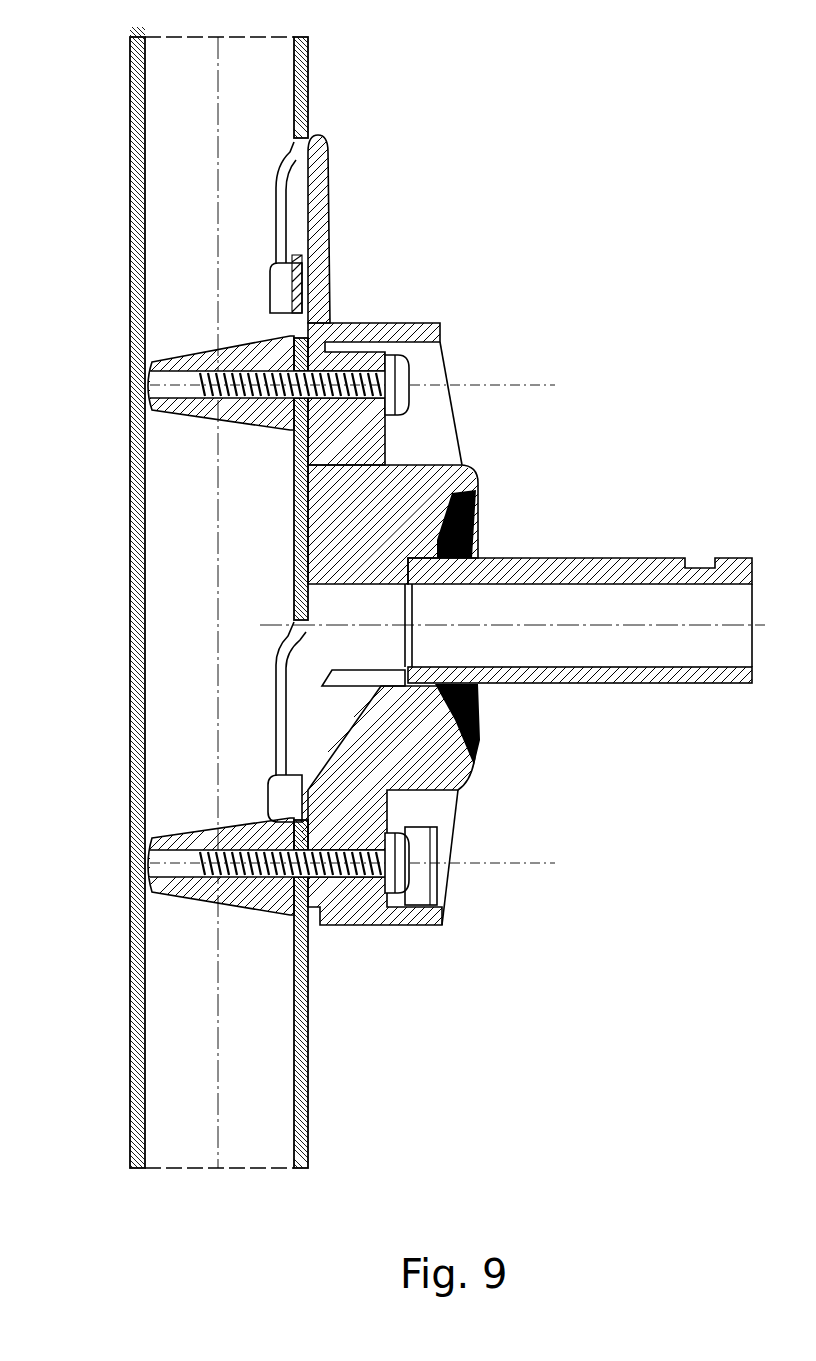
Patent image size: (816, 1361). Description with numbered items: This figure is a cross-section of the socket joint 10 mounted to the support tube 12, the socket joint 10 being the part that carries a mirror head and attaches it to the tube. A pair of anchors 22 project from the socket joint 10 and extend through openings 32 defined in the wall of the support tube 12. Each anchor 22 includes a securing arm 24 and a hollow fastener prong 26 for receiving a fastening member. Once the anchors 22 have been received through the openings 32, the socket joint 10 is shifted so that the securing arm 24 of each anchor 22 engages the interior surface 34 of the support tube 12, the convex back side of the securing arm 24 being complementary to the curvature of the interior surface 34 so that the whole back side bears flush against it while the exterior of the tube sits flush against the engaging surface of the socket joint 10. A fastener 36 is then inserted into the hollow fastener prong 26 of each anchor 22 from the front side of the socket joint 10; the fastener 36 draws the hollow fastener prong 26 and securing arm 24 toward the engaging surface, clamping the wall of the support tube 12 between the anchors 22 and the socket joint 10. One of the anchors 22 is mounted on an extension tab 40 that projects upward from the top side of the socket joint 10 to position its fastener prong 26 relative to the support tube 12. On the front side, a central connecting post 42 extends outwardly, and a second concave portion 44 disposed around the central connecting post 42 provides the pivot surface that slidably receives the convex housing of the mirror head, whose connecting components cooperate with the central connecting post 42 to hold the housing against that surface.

The socket joint 10 is at (388, 321).
The support tube 12 is at (130, 97).
The anchors 22 is at (234, 331).
The securing arm 24 is at (284, 302).
The hollow fastener prong 26 is at (163, 372).
The openings 32 is at (279, 198).
The interior surface 34 is at (296, 478).
The fastener 36 is at (410, 398).
The extension tab 40 is at (322, 186).
The central connecting post 42 is at (580, 563).
The second concave portion 44 is at (463, 525).